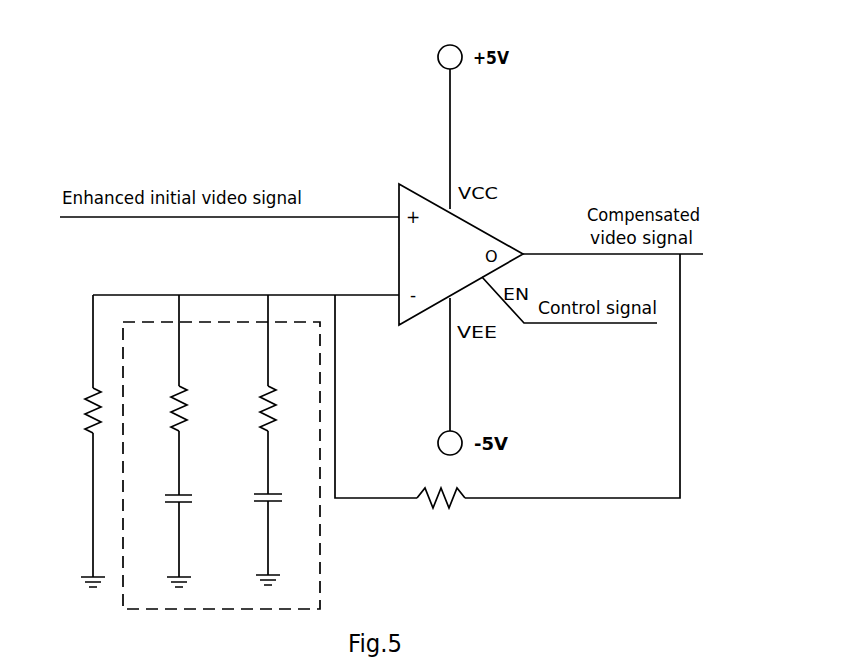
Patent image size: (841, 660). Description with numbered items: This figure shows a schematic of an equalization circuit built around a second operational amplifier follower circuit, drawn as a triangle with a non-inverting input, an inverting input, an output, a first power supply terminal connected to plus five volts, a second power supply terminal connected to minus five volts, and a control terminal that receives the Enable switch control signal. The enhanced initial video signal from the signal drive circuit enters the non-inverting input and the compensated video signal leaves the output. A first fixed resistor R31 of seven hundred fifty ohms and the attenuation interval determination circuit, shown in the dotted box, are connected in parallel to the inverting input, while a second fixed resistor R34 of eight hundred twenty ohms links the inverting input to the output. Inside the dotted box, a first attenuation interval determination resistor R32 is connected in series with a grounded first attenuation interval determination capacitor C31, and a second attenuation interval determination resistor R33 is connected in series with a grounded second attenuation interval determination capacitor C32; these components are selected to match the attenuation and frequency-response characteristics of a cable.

The first fixed resistor R31 is at (76, 441).
The first attenuation interval determination resistor R32 is at (160, 395).
The second attenuation interval determination resistor R33 is at (249, 394).
The second fixed resistor R34 is at (441, 513).
The first attenuation interval determination capacitor C31 is at (160, 538).
The second attenuation interval determination capacitor C32 is at (247, 537).